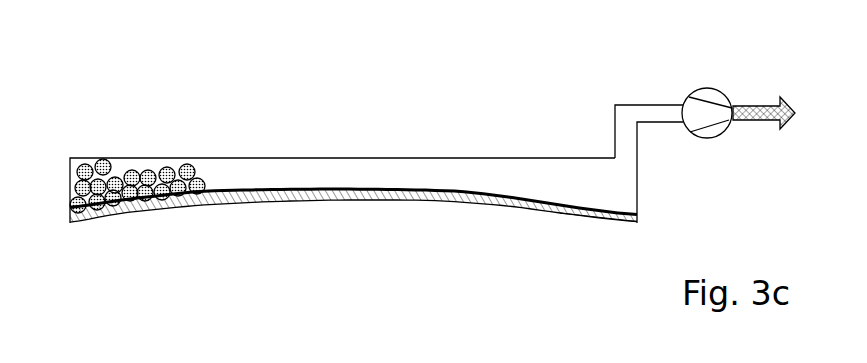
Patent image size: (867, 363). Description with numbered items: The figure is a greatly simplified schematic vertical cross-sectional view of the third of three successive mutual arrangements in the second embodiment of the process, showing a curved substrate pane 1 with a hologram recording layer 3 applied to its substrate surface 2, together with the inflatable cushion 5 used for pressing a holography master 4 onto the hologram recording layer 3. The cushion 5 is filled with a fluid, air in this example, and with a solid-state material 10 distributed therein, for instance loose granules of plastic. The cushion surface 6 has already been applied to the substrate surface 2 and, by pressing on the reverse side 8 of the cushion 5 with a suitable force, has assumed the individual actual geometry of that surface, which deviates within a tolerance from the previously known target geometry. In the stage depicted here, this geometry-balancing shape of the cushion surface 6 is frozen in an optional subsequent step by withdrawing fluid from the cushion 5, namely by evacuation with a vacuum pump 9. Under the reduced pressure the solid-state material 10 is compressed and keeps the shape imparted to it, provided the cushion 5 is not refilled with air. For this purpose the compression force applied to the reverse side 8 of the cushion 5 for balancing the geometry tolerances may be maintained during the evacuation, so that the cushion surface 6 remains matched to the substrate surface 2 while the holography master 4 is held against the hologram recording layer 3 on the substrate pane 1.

The curved substrate pane 1 is at (322, 198).
The substrate surface 2 is at (263, 190).
The hologram recording layer 3 is at (310, 188).
The holography master 4 is at (470, 200).
The inflatable cushion 5 is at (242, 168).
The cushion surface 6 is at (560, 220).
The reverse side 8 is at (493, 158).
The vacuum pump 9 is at (711, 94).
The solid-state material 10 is at (118, 183).